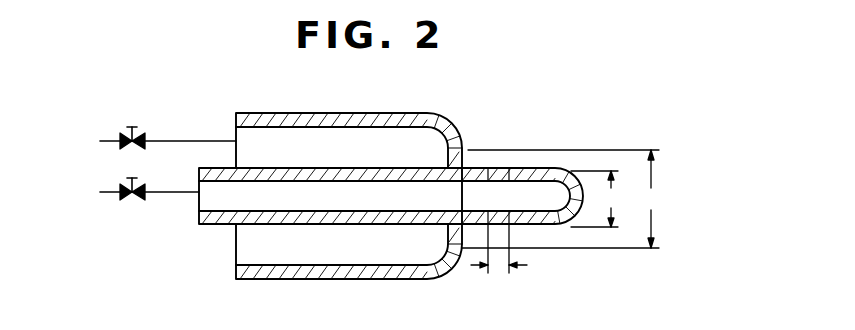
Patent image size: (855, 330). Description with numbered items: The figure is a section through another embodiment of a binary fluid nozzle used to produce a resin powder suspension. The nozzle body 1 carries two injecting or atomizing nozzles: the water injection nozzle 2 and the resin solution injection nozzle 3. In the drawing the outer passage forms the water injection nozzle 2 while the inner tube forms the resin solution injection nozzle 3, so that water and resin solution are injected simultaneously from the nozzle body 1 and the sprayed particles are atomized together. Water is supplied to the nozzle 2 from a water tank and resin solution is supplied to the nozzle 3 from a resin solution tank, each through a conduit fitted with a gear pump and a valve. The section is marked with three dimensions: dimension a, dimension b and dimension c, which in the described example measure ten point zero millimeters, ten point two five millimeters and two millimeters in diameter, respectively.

The nozzle body 1 is at (450, 116).
The water injection nozzle 2 is at (456, 162).
The resin solution injection nozzle 3 is at (502, 178).
The dimension a is at (594, 199).
The dimension b is at (560, 199).
The dimension c is at (499, 249).